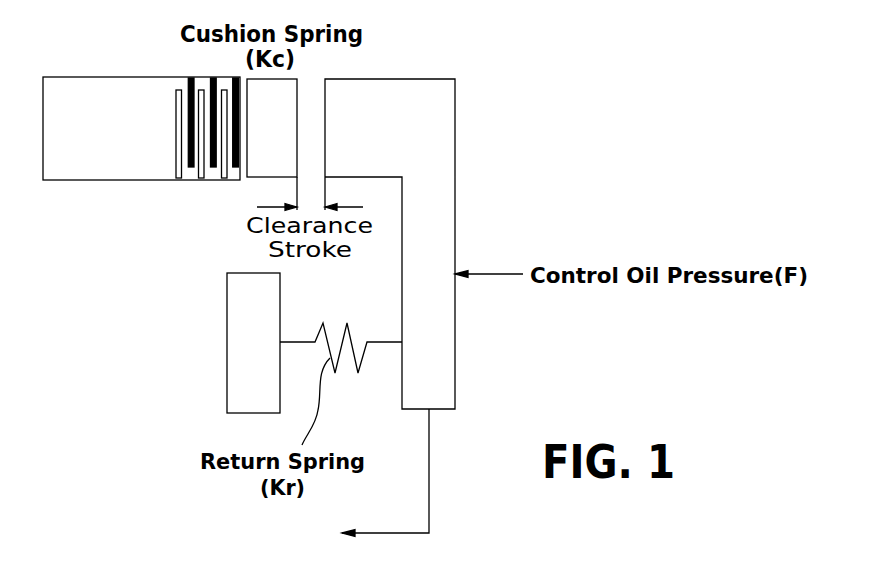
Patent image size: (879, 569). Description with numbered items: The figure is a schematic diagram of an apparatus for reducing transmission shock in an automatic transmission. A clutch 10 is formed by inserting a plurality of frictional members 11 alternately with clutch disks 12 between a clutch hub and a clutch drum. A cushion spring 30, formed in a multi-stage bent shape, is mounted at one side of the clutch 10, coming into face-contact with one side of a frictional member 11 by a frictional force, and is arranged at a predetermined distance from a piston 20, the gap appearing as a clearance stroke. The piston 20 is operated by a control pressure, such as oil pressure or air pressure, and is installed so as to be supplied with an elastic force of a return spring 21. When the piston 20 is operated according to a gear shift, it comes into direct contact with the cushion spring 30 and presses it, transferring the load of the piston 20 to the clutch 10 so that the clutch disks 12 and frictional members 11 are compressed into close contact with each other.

The clutch 10 is at (98, 180).
The frictional member 11 is at (189, 86).
The clutch disk 12 is at (177, 101).
The piston 20 is at (455, 134).
The return spring 21 is at (388, 340).
The cushion spring 30 is at (247, 177).